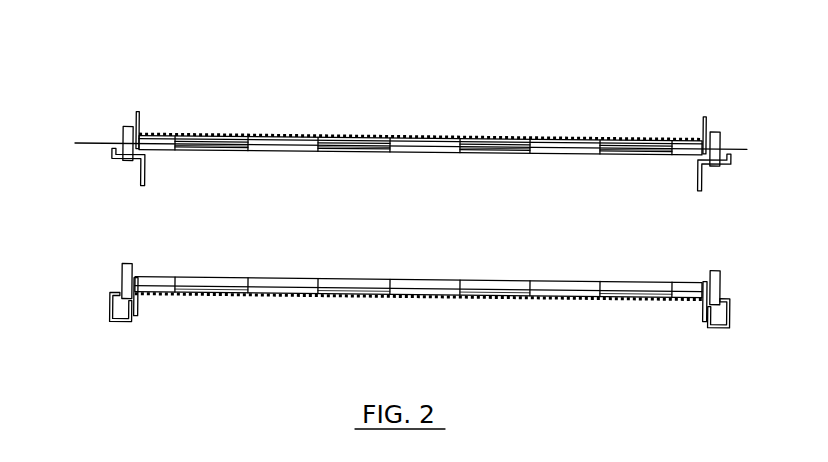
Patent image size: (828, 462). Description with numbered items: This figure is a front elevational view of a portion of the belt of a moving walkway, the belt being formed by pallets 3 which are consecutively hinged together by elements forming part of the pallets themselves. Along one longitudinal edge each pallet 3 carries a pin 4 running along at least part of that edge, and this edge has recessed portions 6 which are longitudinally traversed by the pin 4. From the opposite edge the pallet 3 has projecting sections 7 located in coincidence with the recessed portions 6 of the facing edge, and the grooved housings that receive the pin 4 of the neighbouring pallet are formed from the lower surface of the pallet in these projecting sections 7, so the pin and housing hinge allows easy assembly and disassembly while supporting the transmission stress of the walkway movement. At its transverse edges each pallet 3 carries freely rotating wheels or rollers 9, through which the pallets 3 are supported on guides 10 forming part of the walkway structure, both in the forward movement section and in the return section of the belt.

The pallet 3 is at (562, 136).
The pin 4 is at (372, 150).
The recessed portions 6 is at (212, 140).
The projecting sections 7 is at (212, 294).
The freely rotating wheels or rollers 9 is at (128, 138).
The guides 10 is at (695, 176).